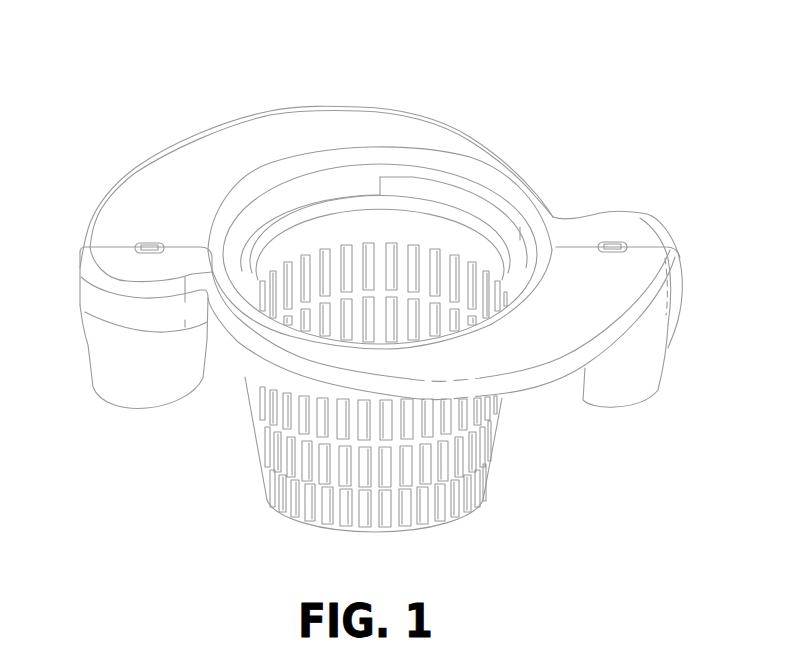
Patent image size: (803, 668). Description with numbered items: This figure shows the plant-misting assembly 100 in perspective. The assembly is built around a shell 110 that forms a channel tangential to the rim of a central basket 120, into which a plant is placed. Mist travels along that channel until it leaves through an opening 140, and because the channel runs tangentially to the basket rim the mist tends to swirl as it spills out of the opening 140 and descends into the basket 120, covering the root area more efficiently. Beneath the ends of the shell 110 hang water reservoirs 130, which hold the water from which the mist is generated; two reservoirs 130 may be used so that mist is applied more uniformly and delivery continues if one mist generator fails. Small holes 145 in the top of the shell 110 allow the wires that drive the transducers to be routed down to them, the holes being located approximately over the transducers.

The skimmer basket assembly 100 is at (723, 38).
The shell 110 is at (310, 138).
The basket 120 is at (497, 488).
The water reservoir 130 is at (105, 398).
The opening 140 is at (447, 192).
The small holes 145 is at (142, 240).